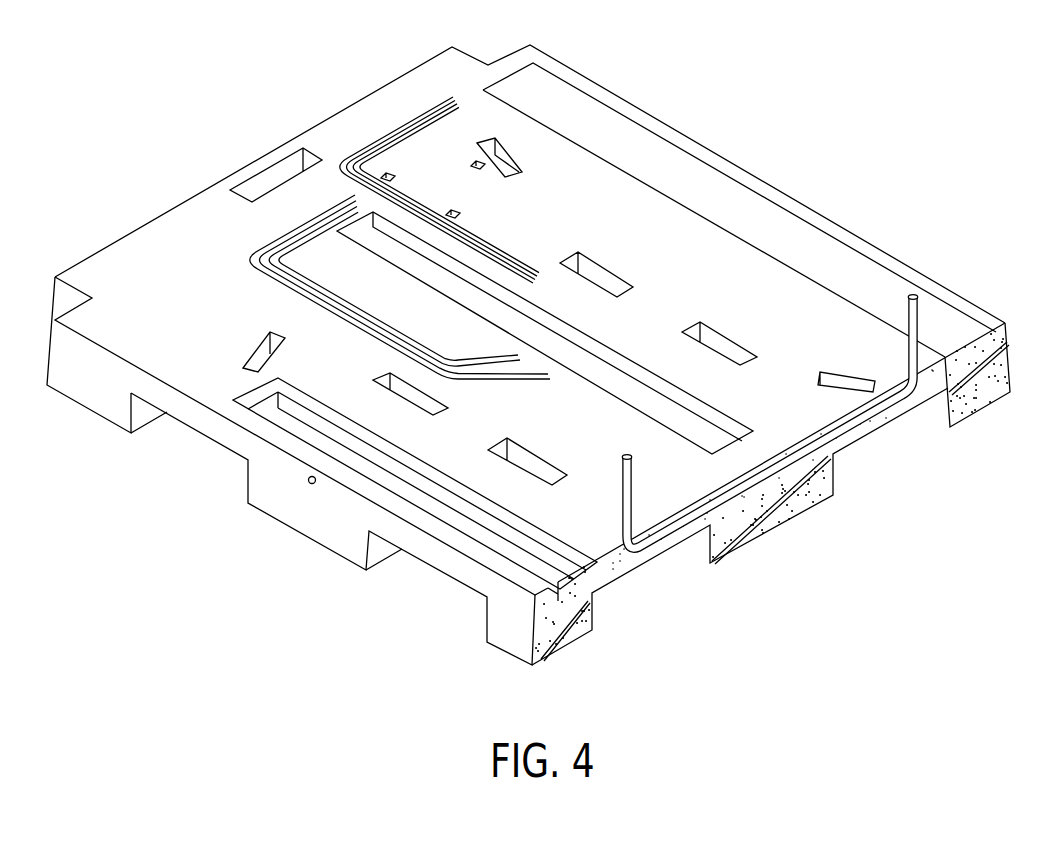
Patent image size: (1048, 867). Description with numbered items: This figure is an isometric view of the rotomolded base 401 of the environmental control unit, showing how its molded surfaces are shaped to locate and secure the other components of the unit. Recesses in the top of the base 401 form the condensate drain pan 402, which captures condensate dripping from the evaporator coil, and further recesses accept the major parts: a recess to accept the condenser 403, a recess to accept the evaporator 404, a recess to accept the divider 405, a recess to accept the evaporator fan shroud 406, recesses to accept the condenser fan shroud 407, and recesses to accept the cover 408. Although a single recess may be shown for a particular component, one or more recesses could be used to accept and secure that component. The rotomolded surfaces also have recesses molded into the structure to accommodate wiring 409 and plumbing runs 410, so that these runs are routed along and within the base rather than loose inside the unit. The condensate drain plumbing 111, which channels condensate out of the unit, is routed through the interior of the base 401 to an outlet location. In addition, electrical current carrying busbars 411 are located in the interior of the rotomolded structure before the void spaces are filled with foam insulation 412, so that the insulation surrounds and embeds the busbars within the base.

The condensate drain plumbing 111 is at (313, 490).
The rotomolded base 401 is at (277, 502).
The condensate drain pan 402 is at (568, 595).
The recess to accept the condenser 403 is at (830, 260).
The recess to accept the evaporator 404 is at (565, 588).
The recess to accept the divider 405 is at (625, 363).
The recess to accept the evaporator fan shroud 406 is at (257, 357).
The recesses to accept the condenser fan shroud 407 is at (607, 278).
The recesses to accept the cover 408 is at (263, 184).
The wiring 409 is at (257, 260).
The plumbing runs 410 is at (877, 410).
The electrical current carrying busbars 411 is at (402, 123).
The foam insulation 412 is at (770, 517).